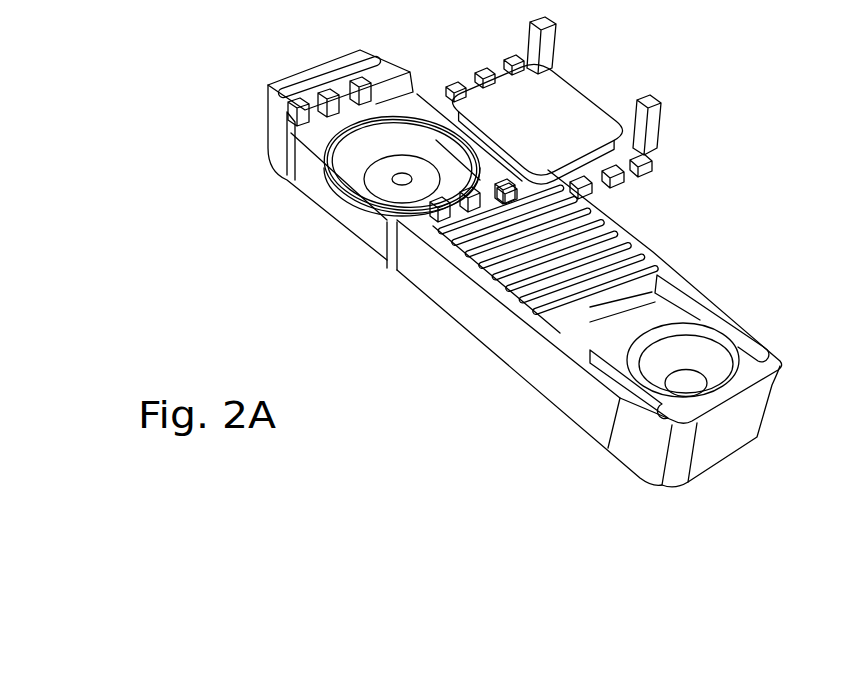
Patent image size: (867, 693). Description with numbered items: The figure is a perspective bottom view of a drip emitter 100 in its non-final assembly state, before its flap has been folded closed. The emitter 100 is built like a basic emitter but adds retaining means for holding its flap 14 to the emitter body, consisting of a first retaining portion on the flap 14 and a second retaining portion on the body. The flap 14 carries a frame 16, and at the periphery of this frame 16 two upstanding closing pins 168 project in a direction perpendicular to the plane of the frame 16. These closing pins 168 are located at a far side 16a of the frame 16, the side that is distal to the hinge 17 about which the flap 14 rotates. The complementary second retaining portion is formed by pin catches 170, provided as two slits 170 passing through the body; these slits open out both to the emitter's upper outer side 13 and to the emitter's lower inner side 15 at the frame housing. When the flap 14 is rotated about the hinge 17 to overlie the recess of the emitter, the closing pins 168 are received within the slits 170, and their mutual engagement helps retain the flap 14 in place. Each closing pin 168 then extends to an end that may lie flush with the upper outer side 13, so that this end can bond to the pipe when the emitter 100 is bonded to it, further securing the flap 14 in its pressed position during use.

The emitter 100 is at (190, 61).
The upper outer side 13 is at (510, 378).
The flap 14 is at (646, 194).
The lower inner side 15 is at (456, 254).
The frame 16 is at (443, 100).
The far side 16a is at (601, 96).
The upstanding closing pins 168 is at (648, 96).
The hinge 17 is at (430, 110).
The pin catches 170 is at (292, 178).